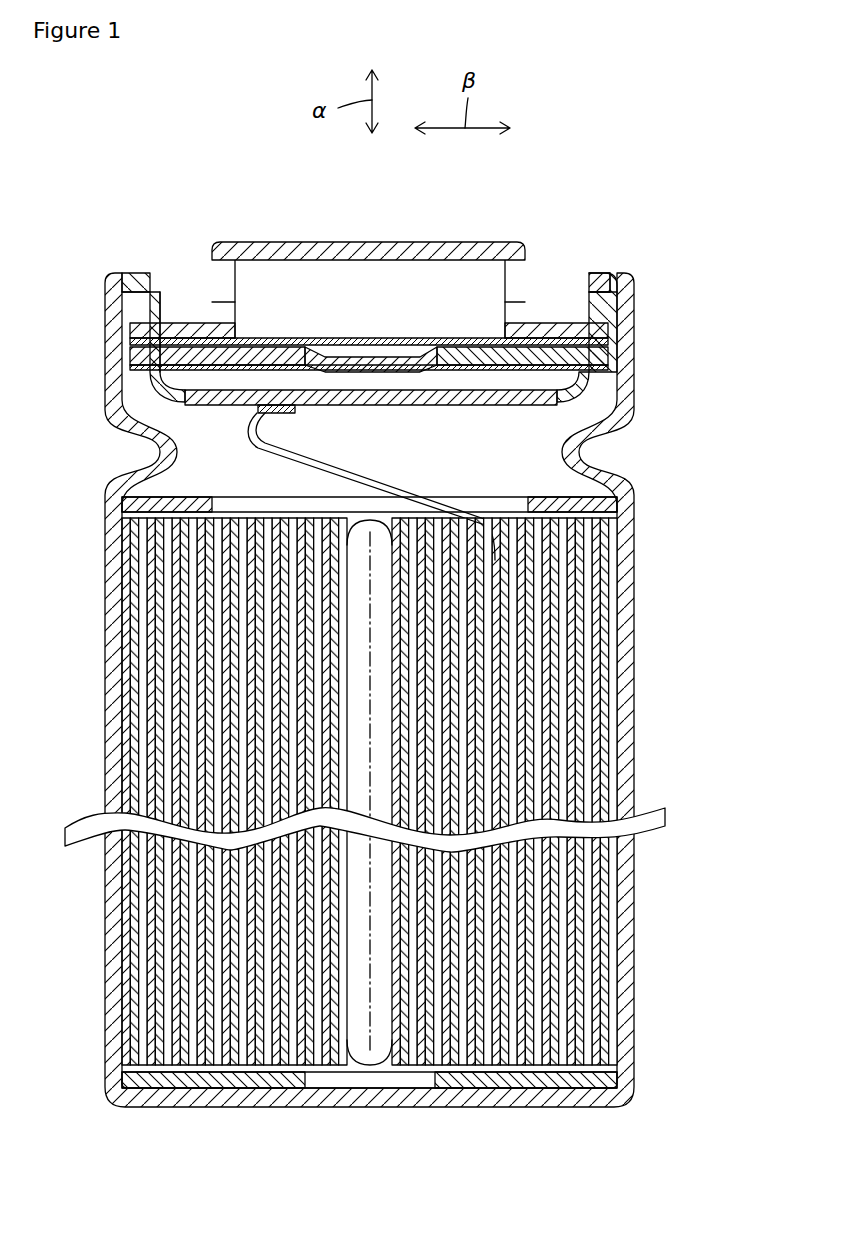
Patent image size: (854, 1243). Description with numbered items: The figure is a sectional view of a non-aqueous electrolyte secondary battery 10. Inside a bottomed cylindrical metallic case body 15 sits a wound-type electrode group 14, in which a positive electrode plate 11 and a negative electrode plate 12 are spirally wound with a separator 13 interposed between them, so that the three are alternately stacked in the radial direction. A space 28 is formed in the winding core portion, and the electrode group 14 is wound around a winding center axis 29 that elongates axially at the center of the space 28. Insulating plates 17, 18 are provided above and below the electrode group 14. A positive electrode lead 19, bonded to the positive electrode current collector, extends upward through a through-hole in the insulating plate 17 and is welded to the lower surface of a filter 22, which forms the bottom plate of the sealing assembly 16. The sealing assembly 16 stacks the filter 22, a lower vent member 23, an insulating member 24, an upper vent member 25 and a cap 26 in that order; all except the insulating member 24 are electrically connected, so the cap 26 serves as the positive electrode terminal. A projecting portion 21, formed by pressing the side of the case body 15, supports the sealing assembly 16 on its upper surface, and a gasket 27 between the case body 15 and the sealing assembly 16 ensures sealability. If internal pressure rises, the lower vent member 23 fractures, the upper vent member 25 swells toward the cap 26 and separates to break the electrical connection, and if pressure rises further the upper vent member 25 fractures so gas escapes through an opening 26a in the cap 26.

The non-aqueous electrolyte secondary battery 10 is at (604, 172).
The positive electrode plate 11 is at (593, 755).
The negative electrode plate 12 is at (610, 790).
The separator 13 is at (603, 882).
The electrode group 14 is at (715, 742).
The case body 15 is at (646, 305).
The sealing assembly 16 is at (369, 234).
The insulating plate 17 is at (592, 497).
The insulating plate 18 is at (617, 1080).
The positive electrode lead 19 is at (177, 438).
The projecting portion 21 is at (570, 456).
The filter 22 is at (479, 404).
The lower vent member 23 is at (272, 360).
The insulating member 24 is at (184, 350).
The upper vent member 25 is at (443, 338).
The cap 26 is at (440, 243).
The opening 26a is at (518, 297).
The gasket 27 is at (600, 278).
The space 28 is at (360, 1042).
The winding center axis 29 is at (385, 1050).